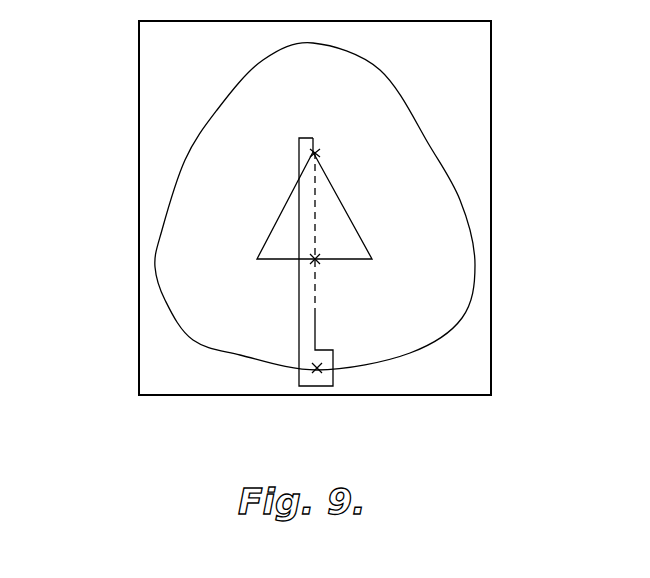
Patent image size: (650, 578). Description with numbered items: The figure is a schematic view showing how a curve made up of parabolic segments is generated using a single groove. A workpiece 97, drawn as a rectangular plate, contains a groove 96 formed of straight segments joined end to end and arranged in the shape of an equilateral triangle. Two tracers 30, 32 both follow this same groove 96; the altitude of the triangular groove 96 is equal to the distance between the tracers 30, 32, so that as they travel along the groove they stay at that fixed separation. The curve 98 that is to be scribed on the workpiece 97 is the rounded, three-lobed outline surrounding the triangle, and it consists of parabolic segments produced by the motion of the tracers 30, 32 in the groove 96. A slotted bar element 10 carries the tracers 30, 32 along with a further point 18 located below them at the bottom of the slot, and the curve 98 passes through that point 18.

The workpiece 97 is at (139, 132).
The curve 98 is at (430, 142).
The indicator pointer 10 is at (298, 297).
The groove 96 is at (263, 248).
The tracer 30 is at (315, 152).
The tracer 32 is at (315, 259).
The lower pivot point 18 is at (317, 370).